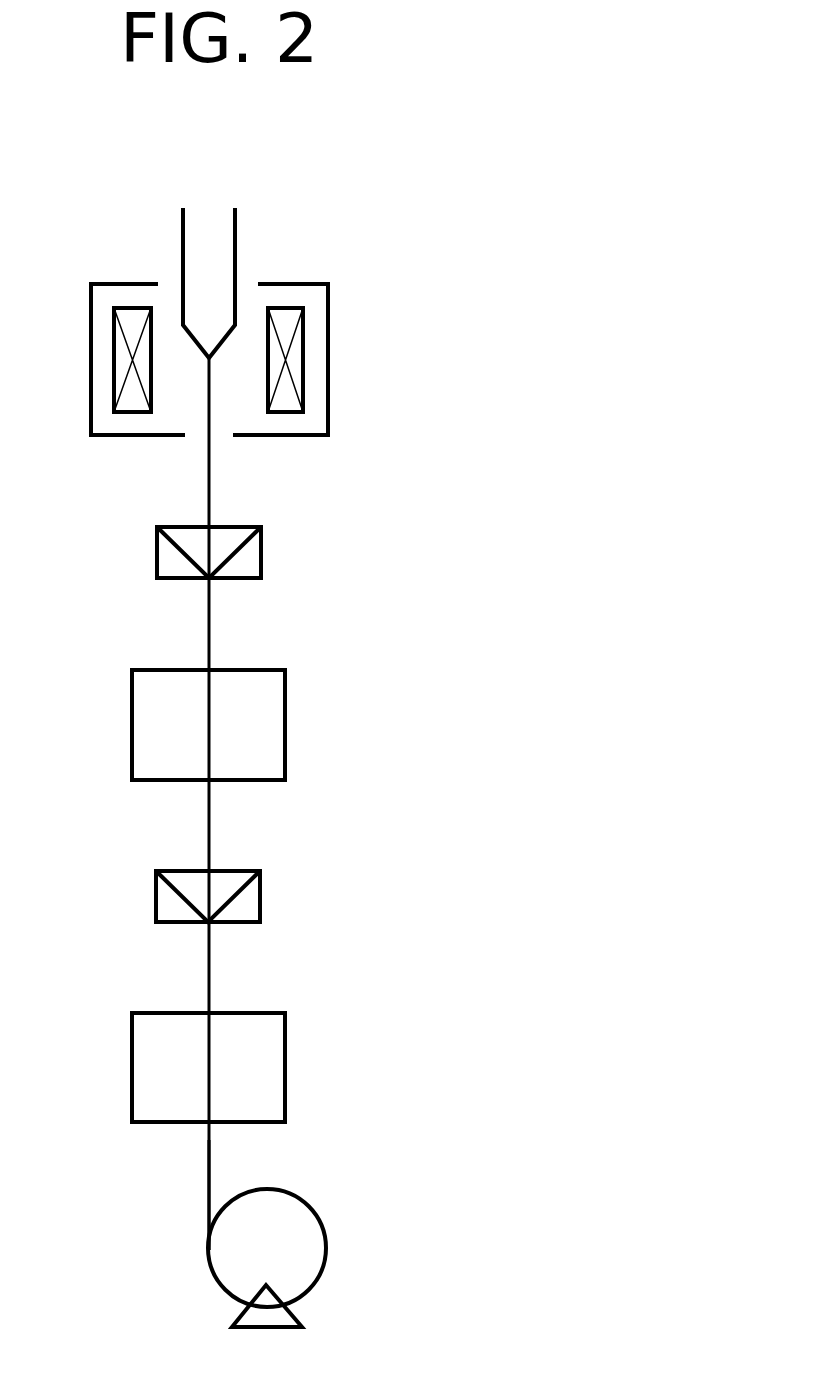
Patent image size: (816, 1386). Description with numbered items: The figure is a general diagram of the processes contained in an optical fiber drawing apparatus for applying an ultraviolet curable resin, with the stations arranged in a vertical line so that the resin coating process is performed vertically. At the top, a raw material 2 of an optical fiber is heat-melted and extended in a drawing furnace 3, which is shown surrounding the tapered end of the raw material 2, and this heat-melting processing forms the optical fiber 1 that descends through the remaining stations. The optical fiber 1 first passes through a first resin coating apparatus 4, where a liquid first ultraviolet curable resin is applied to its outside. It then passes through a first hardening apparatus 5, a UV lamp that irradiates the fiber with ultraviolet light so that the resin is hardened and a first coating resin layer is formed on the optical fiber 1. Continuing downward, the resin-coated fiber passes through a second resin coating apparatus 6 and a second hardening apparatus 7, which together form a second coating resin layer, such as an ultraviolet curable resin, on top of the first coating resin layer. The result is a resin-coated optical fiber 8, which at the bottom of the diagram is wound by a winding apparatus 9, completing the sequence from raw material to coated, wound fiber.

The optical fiber 1 is at (209, 480).
The raw material of an optical fiber 2 is at (235, 240).
The drawing furnace 3 is at (328, 362).
The first resin coating apparatus 4 is at (261, 548).
The first hardening apparatus 5 is at (285, 718).
The second resin coating apparatus 6 is at (260, 892).
The second hardening apparatus 7 is at (285, 1062).
The resin-coated optical fiber 8 is at (205, 1165).
The winding apparatus 9 is at (323, 1222).